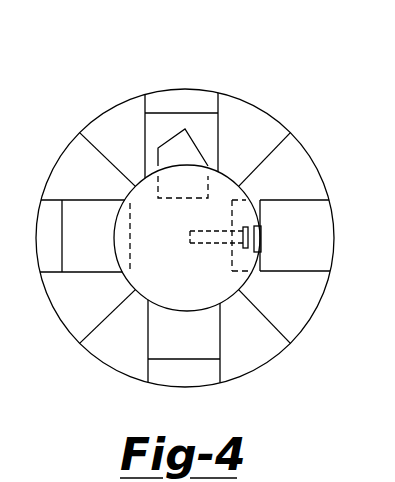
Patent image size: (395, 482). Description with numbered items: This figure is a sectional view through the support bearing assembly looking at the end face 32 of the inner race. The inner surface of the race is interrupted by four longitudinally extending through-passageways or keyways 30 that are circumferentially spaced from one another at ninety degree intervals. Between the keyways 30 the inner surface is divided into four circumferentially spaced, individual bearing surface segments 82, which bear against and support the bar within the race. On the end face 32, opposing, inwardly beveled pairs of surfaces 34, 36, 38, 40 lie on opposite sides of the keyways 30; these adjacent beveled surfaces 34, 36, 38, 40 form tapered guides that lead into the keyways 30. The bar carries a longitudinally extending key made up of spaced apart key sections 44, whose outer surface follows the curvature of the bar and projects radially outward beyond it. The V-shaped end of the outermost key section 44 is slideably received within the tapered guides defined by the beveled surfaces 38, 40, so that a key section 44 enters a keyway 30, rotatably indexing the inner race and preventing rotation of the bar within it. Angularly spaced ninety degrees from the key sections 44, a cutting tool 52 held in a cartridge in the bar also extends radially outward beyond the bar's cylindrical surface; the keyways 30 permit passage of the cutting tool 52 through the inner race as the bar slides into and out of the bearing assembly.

The keyways 30 is at (203, 127).
The end face 32 is at (138, 110).
The beveled surface 34 is at (107, 135).
The beveled surface 36 is at (292, 180).
The beveled surface 38 is at (257, 348).
The beveled surface 40 is at (65, 173).
The key sections 44 is at (260, 218).
The cutting tool 52 is at (180, 143).
The bearing surface segments 82 is at (230, 193).